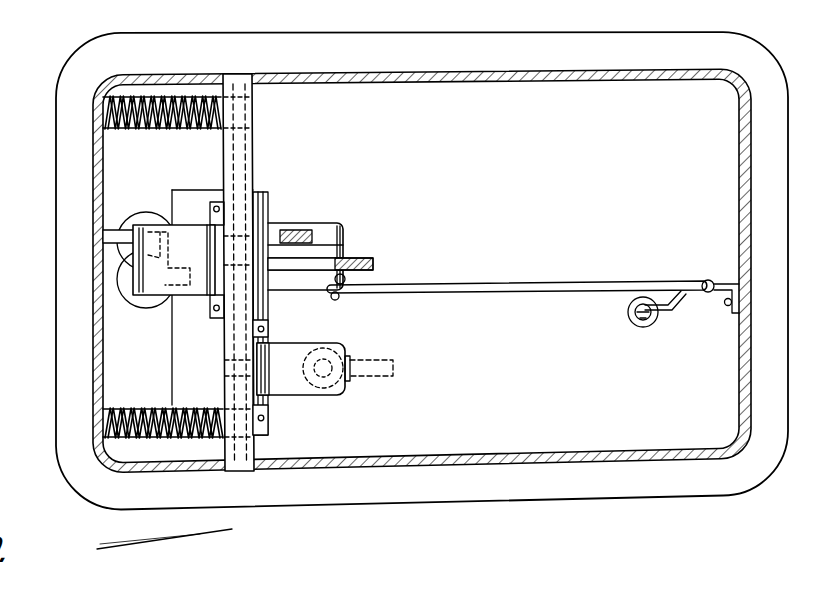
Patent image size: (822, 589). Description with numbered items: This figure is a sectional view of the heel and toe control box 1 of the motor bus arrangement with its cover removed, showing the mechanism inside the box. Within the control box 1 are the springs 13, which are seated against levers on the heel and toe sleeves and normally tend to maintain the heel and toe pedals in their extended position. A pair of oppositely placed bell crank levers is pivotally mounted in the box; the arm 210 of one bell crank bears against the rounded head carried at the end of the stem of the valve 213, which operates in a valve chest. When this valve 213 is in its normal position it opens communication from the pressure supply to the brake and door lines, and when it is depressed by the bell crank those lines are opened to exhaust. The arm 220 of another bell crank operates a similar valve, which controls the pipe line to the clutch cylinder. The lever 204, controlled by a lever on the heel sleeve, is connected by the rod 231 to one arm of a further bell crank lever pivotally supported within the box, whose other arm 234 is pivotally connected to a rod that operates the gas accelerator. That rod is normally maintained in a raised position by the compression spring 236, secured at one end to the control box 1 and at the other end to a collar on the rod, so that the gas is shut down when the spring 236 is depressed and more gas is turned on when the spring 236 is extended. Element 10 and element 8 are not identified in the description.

The heel and toe control box 1 is at (430, 72).
The springs 13 is at (168, 127).
The cylinder 10 is at (307, 230).
The arm of bell crank lever 204 is at (345, 235).
The rod 8 is at (373, 260).
The rod 231 is at (495, 283).
The arm of bell crank 210 is at (150, 257).
The valve 213 is at (153, 300).
The arm of bell crank 220 is at (307, 342).
The arm of bell crank lever 234 is at (671, 308).
The compression spring 236 is at (641, 328).